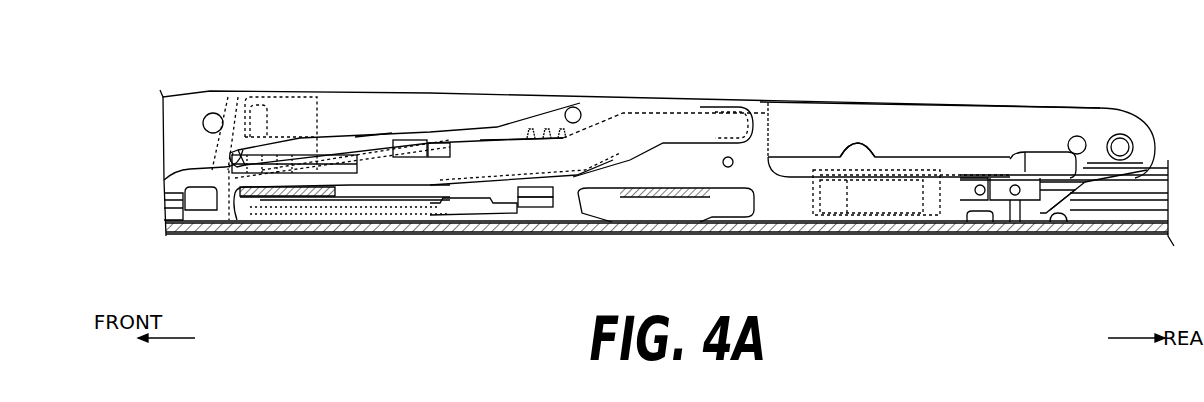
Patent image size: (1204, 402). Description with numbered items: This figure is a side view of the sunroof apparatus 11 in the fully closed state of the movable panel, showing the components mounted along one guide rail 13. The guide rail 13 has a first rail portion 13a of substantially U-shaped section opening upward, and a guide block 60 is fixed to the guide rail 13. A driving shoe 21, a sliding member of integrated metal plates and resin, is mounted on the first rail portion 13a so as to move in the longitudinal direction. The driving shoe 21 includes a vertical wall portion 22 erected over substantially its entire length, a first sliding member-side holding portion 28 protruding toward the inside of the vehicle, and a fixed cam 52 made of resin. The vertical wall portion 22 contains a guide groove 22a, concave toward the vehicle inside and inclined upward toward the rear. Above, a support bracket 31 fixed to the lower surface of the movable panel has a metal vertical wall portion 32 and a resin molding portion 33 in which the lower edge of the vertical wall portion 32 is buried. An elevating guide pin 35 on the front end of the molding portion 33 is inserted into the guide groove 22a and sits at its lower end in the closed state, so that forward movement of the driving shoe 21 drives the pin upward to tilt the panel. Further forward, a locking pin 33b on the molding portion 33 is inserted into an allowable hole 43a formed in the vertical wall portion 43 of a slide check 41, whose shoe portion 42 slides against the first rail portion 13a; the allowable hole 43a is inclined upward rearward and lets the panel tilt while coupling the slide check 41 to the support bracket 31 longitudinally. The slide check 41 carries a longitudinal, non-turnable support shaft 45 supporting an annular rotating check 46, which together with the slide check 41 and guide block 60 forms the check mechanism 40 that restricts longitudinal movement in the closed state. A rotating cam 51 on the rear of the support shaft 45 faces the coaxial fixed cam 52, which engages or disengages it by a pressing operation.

The sunroof apparatus 11 is at (482, 76).
The guide rail 13 is at (1126, 236).
The first rail portion 13a is at (1063, 235).
The driving shoe 21 is at (772, 126).
The vertical wall portion 22 is at (401, 139).
The guide groove 22a is at (493, 138).
The first sliding member-side holding portion 28 is at (992, 236).
The support bracket 31 is at (974, 107).
The vertical wall portion 32 is at (1040, 120).
The molding portion 33 is at (1025, 167).
The locking pin 33b is at (227, 233).
The elevating guide pin 35 is at (275, 236).
The check mechanism 40 is at (350, 237).
The slide check 41 is at (183, 212).
The shoe portion 42 is at (187, 236).
The vertical wall portion 43 is at (229, 92).
The allowable hole 43a is at (272, 92).
The support shaft 45 is at (373, 134).
The rotating check 46 is at (332, 156).
The rotating cam 51 is at (444, 238).
The fixed cam 52 is at (873, 155).
The guide block 60 is at (447, 143).